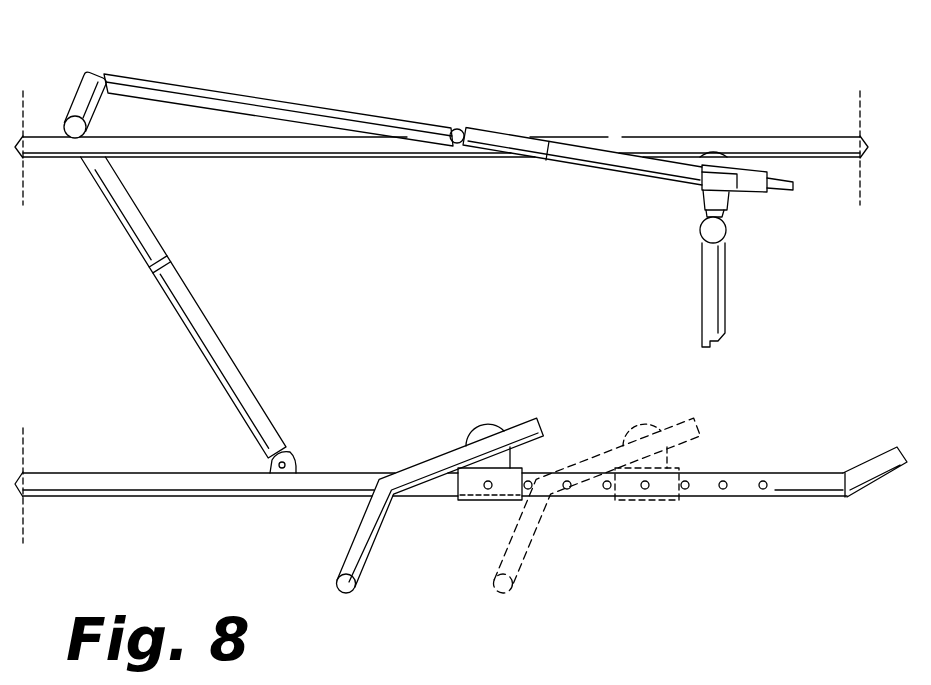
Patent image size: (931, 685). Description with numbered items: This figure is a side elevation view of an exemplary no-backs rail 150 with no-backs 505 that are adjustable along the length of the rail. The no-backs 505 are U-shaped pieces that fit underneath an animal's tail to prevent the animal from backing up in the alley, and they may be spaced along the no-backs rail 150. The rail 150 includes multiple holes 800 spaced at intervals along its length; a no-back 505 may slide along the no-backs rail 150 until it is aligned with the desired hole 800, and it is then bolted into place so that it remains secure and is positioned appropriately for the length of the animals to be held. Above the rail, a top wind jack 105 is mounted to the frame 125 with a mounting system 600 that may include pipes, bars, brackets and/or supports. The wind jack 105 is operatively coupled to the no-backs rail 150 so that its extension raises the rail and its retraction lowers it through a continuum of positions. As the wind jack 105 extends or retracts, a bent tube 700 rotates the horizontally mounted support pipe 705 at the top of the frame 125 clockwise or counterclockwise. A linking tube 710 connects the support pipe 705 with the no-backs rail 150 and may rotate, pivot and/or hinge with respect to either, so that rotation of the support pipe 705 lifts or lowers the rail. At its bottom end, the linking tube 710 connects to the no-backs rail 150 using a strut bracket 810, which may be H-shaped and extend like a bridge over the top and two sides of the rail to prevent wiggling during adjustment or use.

The wind jack 105 is at (613, 137).
The frame 125 is at (768, 136).
The no-backs rail 150 is at (133, 484).
The no-backs 505 is at (365, 542).
The mounting system 600 is at (700, 229).
The bent tube 700 is at (230, 93).
The support pipe 705 is at (63, 124).
The linking tube 710 is at (207, 333).
The holes 800 is at (486, 489).
The strut bracket 810 is at (295, 463).